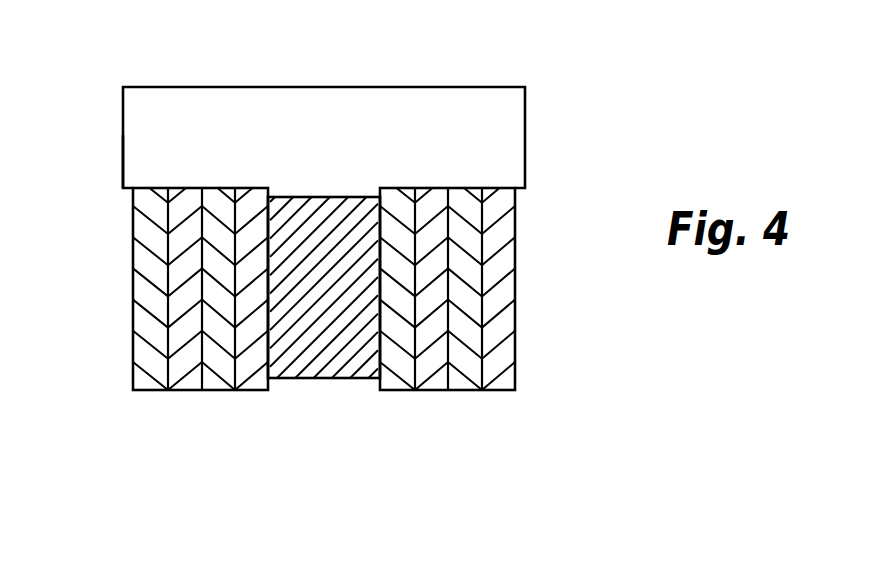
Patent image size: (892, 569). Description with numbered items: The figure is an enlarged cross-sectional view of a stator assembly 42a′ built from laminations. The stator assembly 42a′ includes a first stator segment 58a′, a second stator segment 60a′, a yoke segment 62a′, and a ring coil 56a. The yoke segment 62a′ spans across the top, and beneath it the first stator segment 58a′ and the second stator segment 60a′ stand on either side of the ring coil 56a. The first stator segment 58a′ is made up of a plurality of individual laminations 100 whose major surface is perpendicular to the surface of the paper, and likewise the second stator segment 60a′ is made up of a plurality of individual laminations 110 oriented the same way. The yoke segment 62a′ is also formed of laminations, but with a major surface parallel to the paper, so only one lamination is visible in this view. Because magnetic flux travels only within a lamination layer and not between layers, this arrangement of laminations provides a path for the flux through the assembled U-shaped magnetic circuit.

The stator assembly 42a′ is at (203, 73).
The yoke segment 62a′ is at (147, 165).
The laminations 100 is at (247, 363).
The laminations 110 is at (405, 358).
The ring coil 56a is at (347, 278).
The first stator segment 58a′ is at (120, 345).
The second stator segment 60a′ is at (517, 372).